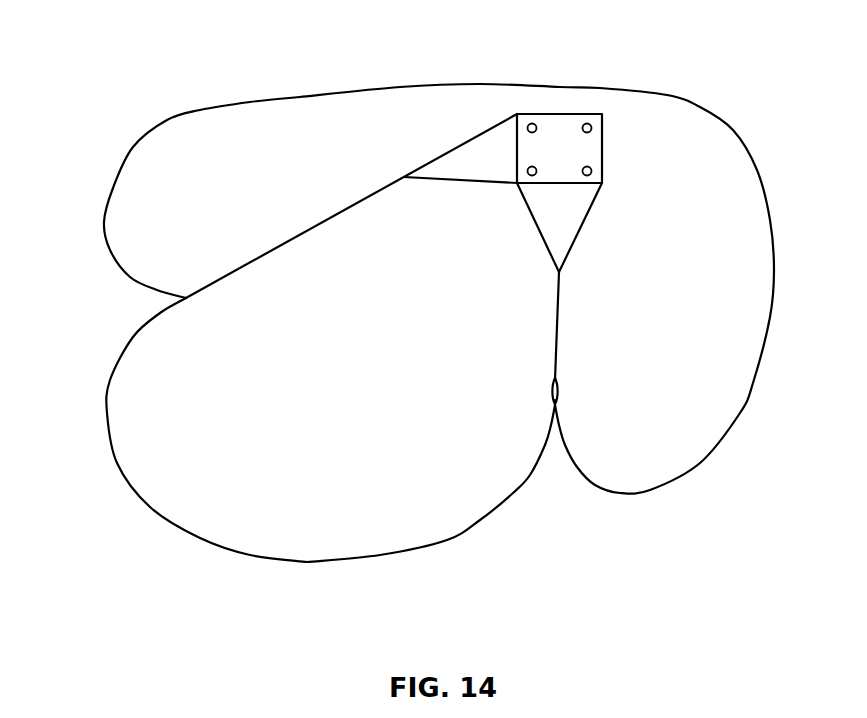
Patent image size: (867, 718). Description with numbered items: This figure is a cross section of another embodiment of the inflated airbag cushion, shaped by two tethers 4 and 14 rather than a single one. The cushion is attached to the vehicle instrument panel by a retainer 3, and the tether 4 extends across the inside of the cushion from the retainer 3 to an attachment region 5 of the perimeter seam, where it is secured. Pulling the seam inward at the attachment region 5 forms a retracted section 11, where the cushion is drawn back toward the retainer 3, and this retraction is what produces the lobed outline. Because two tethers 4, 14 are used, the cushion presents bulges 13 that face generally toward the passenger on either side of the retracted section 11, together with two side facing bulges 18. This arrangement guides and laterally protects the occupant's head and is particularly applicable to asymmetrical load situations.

The retainer 3 is at (559, 135).
The tether 4 is at (582, 228).
The attachment region 5 is at (550, 392).
The retracted section 11 is at (552, 446).
The bulges 13 is at (740, 413).
The tether 14 is at (440, 156).
The side facing bulges 18 is at (104, 212).